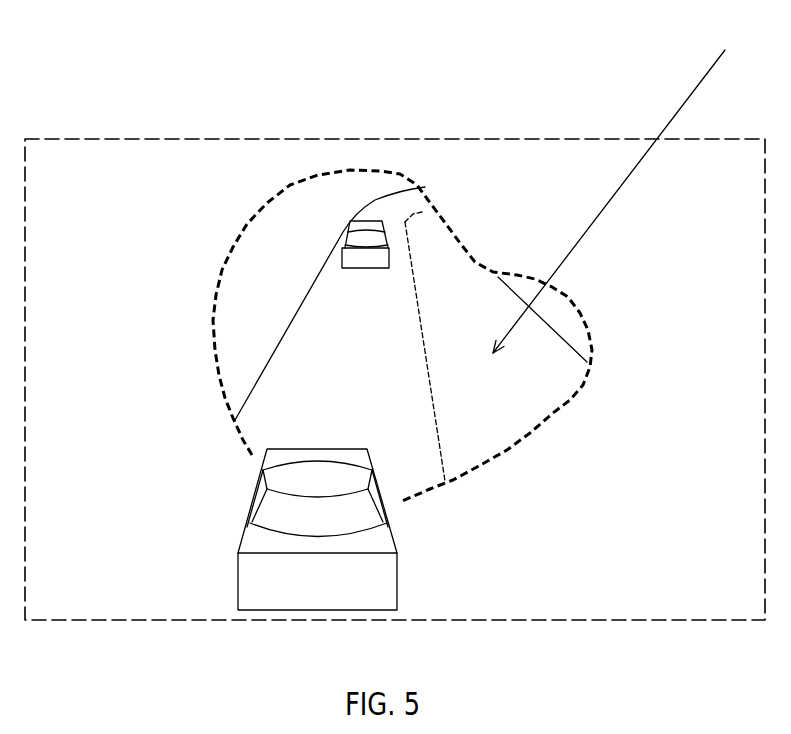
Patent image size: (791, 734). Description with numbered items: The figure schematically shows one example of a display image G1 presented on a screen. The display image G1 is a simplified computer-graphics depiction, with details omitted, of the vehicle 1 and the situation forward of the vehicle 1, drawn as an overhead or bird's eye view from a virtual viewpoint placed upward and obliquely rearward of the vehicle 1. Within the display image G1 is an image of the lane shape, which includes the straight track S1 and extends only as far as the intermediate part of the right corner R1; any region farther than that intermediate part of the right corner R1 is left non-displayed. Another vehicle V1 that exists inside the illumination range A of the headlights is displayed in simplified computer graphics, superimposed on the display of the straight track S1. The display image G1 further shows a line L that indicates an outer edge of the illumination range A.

The display image G1 is at (107, 128).
The another vehicle V1 is at (345, 228).
The right corner R1 is at (375, 200).
The vehicle 1 is at (363, 453).
The straight track S1 is at (460, 325).
The line L is at (498, 277).
The illumination range A is at (614, 184).